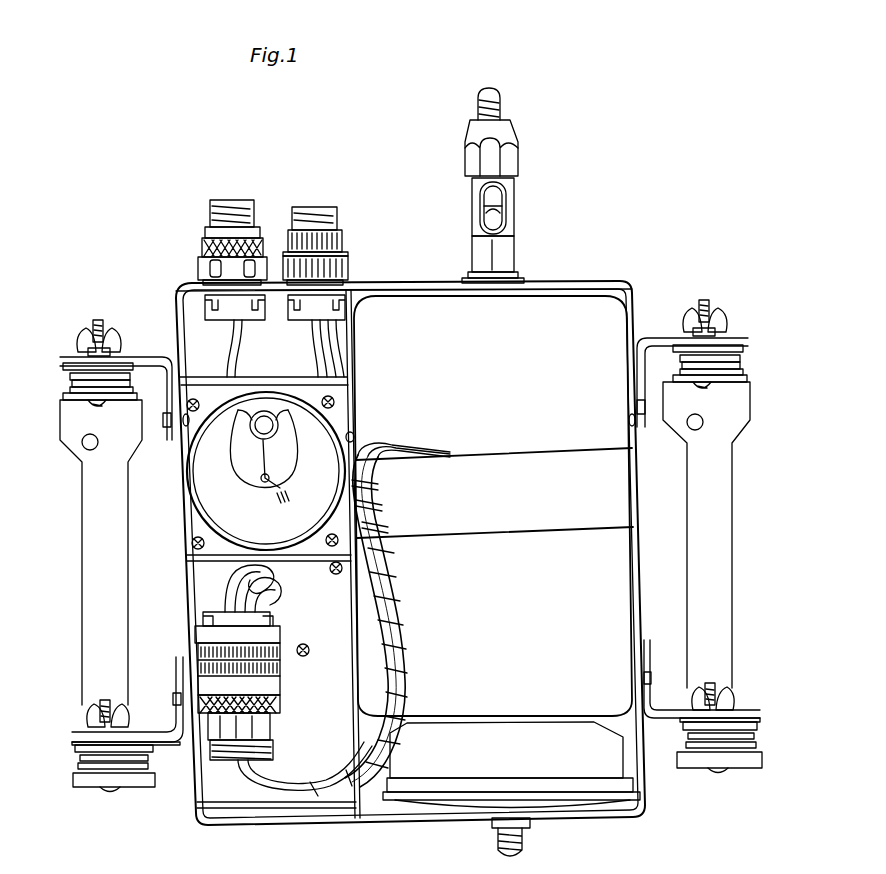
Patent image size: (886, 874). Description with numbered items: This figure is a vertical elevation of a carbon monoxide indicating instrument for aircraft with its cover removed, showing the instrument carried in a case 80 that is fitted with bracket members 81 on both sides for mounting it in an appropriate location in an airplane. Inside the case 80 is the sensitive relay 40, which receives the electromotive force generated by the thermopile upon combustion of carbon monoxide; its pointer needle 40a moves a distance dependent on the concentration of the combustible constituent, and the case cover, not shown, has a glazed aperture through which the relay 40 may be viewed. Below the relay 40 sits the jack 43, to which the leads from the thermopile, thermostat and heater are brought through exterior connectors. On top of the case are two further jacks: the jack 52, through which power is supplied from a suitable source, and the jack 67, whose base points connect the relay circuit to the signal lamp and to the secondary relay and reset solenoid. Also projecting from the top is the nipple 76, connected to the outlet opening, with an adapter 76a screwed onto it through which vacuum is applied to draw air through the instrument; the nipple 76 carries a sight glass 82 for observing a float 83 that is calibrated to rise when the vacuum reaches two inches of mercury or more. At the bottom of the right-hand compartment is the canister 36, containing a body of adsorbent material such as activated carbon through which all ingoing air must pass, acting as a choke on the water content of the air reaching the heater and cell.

The canister 36 is at (556, 760).
The sensitive relay 40 is at (240, 512).
The pointer needle 40a is at (282, 481).
The jack 43 is at (246, 750).
The jack 52 is at (217, 205).
The jack 67 is at (344, 212).
The nipple 76 is at (487, 250).
The adapter 76a is at (515, 160).
The case 80 is at (596, 283).
The bracket members 81 is at (72, 357).
The sight glass 82 is at (497, 192).
The float 83 is at (497, 214).